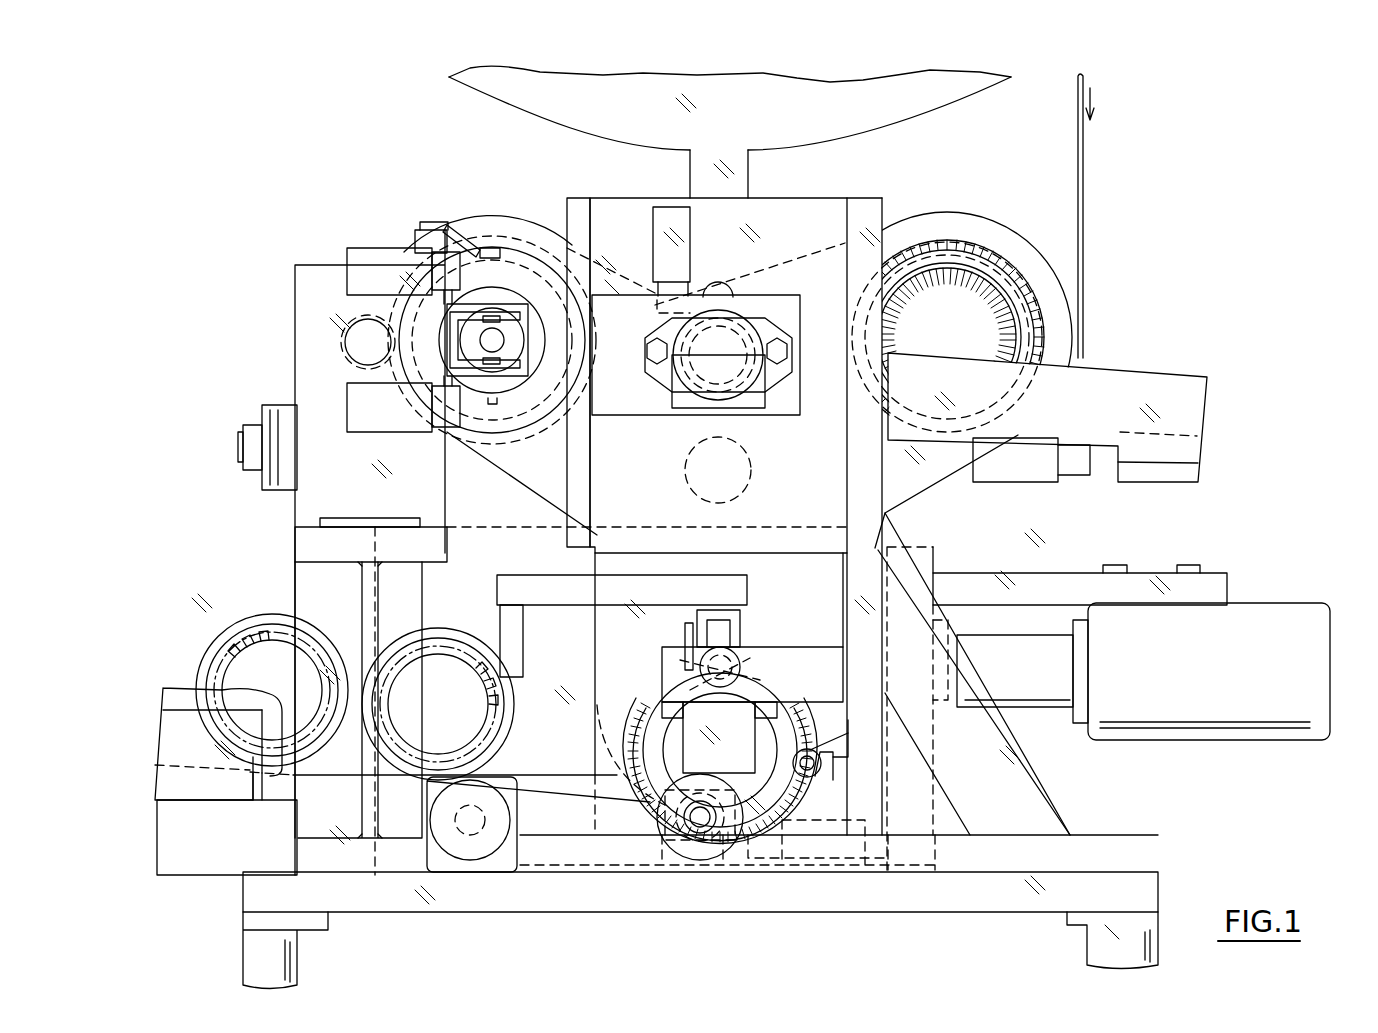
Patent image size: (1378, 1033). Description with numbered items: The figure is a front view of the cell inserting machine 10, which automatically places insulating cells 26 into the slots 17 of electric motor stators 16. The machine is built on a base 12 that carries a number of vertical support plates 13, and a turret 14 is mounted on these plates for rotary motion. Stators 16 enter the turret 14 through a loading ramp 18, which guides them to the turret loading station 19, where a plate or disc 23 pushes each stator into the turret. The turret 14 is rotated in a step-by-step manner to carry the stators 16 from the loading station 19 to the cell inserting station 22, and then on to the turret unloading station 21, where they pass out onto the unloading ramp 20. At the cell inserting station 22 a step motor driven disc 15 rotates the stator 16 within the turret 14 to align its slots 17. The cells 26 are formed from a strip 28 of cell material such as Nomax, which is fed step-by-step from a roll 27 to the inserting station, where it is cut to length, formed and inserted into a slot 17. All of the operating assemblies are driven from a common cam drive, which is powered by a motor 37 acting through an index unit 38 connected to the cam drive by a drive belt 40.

The cell inserting machine 10 is at (1142, 312).
The base 12 is at (1150, 888).
The vertical support plates 13 is at (880, 547).
The turret 14 is at (912, 220).
The step motor driven disc 15 is at (348, 368).
The stators 16 is at (1005, 290).
The slots 17 is at (268, 641).
The loading ramp 18 is at (160, 738).
The turret loading station 19 is at (616, 719).
The unloading ramp 20 is at (1197, 418).
The turret unloading station 21 is at (962, 235).
The cell inserting station 22 is at (524, 264).
The plate or disc 23 is at (632, 742).
The cells 26 is at (985, 270).
The roll 27 is at (905, 118).
The strip of cell material 28 is at (1085, 248).
The motor 37 is at (1248, 732).
The index unit 38 is at (293, 336).
The drive belt 40 is at (270, 490).